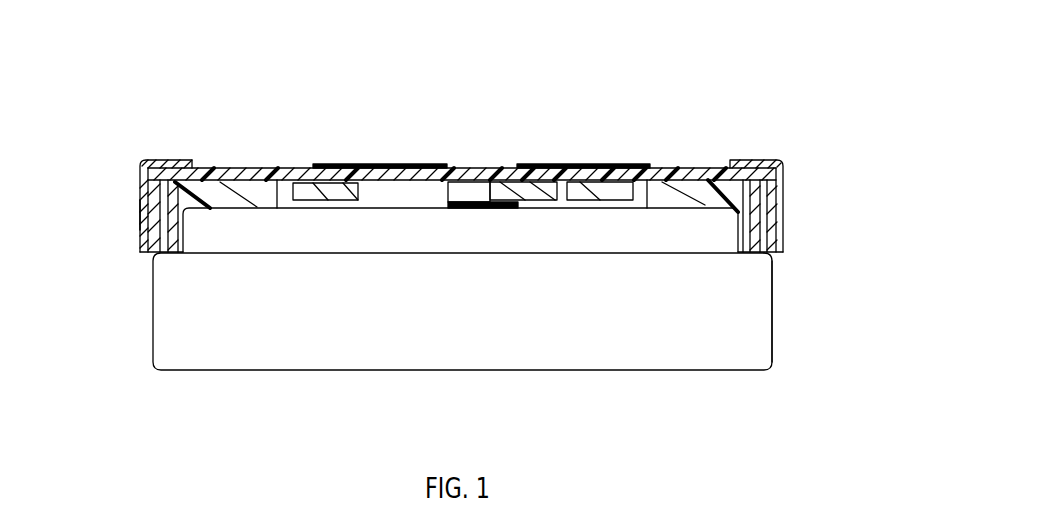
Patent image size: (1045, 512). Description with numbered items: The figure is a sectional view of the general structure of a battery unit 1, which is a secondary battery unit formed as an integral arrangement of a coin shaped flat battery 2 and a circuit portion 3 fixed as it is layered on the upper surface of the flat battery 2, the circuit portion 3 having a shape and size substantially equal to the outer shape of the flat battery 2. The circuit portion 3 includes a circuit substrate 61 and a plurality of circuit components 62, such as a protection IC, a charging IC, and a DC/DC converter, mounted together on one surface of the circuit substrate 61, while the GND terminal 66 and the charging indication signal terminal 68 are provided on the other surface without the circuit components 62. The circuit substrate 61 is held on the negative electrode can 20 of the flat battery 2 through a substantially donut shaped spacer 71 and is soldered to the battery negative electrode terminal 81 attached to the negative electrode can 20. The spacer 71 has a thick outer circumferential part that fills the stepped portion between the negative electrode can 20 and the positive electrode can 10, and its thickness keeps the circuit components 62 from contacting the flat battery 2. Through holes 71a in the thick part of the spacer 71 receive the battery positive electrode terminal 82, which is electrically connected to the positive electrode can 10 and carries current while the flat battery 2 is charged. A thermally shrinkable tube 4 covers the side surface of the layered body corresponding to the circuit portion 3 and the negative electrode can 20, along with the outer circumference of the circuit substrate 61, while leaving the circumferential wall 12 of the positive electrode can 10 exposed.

The battery unit 1 is at (762, 128).
The flat battery 2 is at (447, 371).
The circuit portion 3 is at (588, 149).
The tube 4 is at (140, 182).
The positive electrode can 10 is at (608, 357).
The circumferential wall 12 is at (777, 305).
The negative electrode can 20 is at (217, 218).
The circuit substrate 61 is at (668, 172).
The circuit components 62 is at (492, 177).
The GND terminal 66 is at (325, 163).
The charging indication signal terminal 68 is at (528, 166).
The spacer 71 is at (267, 183).
The through holes 71a is at (140, 207).
The battery negative electrode terminal 81 is at (455, 180).
The battery positive electrode terminal 82 is at (778, 202).